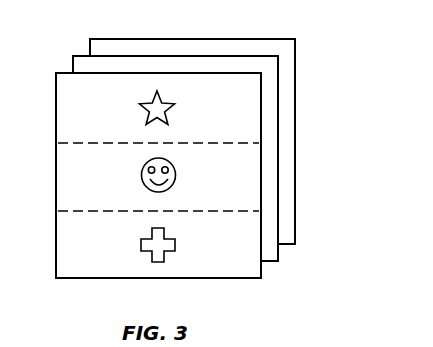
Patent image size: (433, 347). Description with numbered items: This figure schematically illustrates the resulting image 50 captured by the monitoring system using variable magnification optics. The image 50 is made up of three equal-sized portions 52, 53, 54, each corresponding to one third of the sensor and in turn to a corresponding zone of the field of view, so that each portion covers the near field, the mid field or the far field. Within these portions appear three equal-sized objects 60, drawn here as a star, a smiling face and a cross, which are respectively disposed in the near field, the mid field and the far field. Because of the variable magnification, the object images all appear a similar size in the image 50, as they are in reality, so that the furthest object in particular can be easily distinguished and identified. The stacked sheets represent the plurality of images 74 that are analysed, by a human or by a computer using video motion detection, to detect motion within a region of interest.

The image 50 is at (199, 171).
The first portion of the image 52 is at (230, 107).
The second portion of the image 53 is at (230, 178).
The third portion of the image 54 is at (243, 244).
The objects 60 is at (141, 238).
The images 74 is at (235, 39).